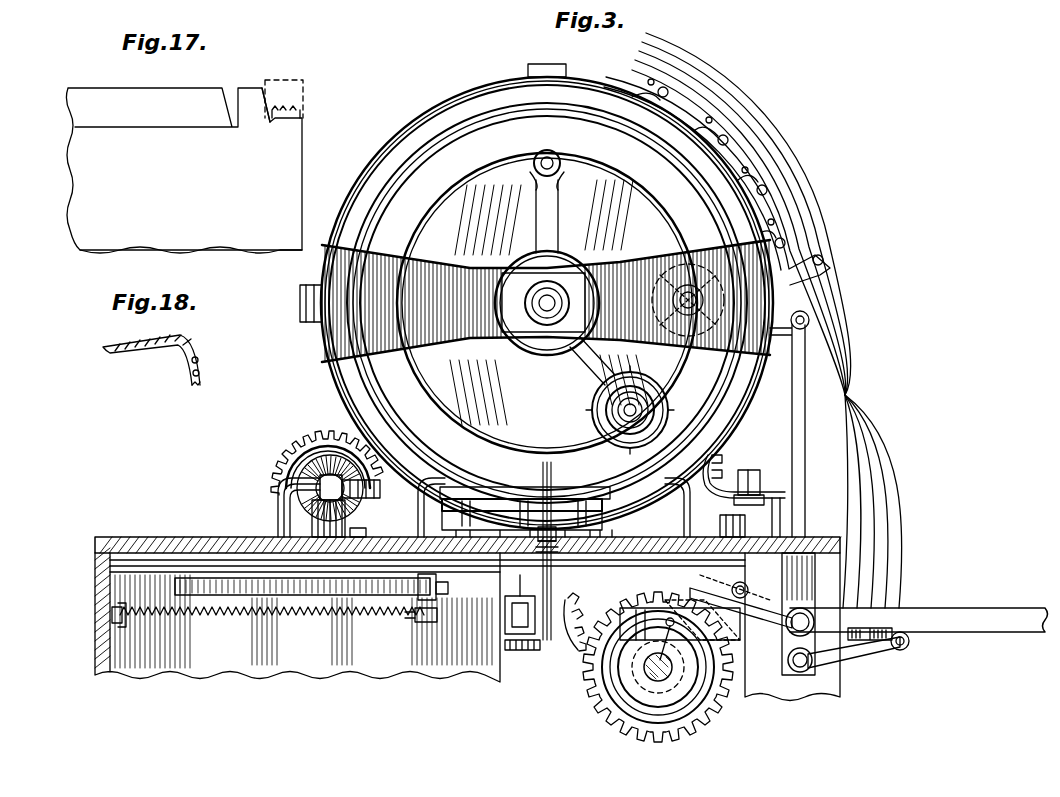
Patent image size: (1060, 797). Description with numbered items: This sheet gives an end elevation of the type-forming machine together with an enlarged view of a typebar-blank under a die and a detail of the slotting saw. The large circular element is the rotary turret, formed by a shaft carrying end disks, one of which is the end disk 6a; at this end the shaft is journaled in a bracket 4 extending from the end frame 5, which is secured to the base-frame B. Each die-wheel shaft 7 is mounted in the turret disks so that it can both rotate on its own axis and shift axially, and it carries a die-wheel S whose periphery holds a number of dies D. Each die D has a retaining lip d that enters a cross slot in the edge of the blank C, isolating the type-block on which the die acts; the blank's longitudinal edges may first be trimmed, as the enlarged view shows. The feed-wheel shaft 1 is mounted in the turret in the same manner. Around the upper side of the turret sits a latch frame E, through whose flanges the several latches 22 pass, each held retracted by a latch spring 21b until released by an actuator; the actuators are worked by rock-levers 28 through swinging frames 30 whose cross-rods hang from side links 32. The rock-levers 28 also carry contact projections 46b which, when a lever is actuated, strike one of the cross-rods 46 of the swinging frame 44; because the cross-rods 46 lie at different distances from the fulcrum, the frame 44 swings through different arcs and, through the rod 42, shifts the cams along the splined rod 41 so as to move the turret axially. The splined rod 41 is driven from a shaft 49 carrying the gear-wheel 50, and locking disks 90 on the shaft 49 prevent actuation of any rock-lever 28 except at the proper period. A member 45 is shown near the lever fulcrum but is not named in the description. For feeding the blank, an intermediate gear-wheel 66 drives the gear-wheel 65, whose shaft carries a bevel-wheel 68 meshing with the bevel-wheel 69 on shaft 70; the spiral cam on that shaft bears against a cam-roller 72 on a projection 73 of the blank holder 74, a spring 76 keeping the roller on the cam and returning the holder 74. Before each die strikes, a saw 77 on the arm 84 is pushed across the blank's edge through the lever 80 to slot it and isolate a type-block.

In FIG. 3, the feed-wheel shaft 1 is at (556, 150).
In FIG. 3, the bracket 4 is at (430, 262).
In FIG. 3, the end frame 5 is at (470, 105).
In FIG. 3, the end disk 6a is at (405, 213).
In FIG. 3, the shaft 7 is at (636, 414).
In FIG. 3, the latch spring 21b is at (840, 225).
In FIG. 3, the latch 22 is at (767, 320).
In FIG. 3, the rock-lever 28 is at (975, 608).
In FIG. 3, the swinging frame 30 is at (892, 640).
In FIG. 3, the side link 32 is at (885, 650).
In FIG. 3, the splined rod 41 is at (575, 622).
In FIG. 3, the rod 42 is at (790, 452).
In FIG. 3, the swinging frame 44 is at (749, 601).
In FIG. 3, the post 45 is at (770, 562).
In FIG. 3, the cross-rod 46 is at (700, 610).
In FIG. 3, the contact projection 46b is at (740, 500).
In FIG. 3, the shaft 49 is at (648, 672).
In FIG. 3, the gear-wheel 50 is at (630, 695).
In FIG. 3, the gear-wheel 65 is at (297, 470).
In FIG. 3, the intermediate gear-wheel 66 is at (345, 445).
In FIG. 3, the bevel-wheel 68 is at (318, 484).
In FIG. 3, the bevel-wheel 69 is at (278, 518).
In FIG. 3, the shaft 70 is at (345, 528).
In FIG. 3, the cam-roller 72 is at (436, 590).
In FIG. 3, the projection 73 is at (437, 618).
In FIG. 3, the blank holder 74 is at (590, 518).
In FIG. 3, the spring 76 is at (380, 625).
In FIG. 18, the saw 77 is at (188, 343).
In FIG. 3, the saw 77 is at (553, 547).
In FIG. 3, the lever 80 is at (505, 602).
In FIG. 18, the arm 84 is at (200, 365).
In FIG. 3, the locking disk 90 is at (650, 660).
In FIG. 3, the base-frame B is at (468, 563).
In FIG. 17, the blank C is at (165, 160).
In FIG. 3, the blank C is at (554, 496).
In FIG. 17, the die D is at (284, 90).
In FIG. 3, the die D is at (574, 423).
In FIG. 3, the latch frame E is at (717, 176).
In FIG. 3, the die-wheel S is at (677, 407).
In FIG. 17, the retaining lip d is at (268, 125).
In FIG. 3, the retaining lip d is at (660, 270).